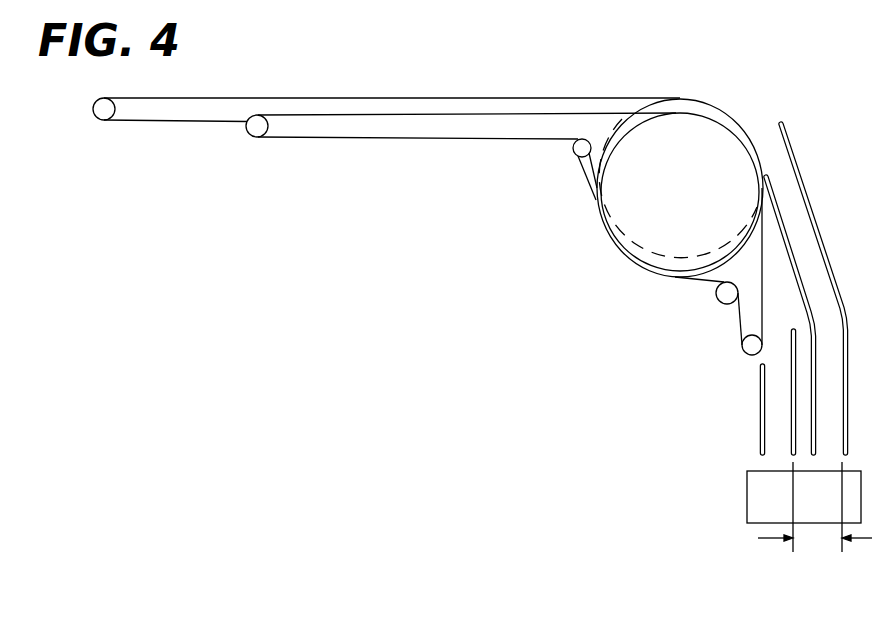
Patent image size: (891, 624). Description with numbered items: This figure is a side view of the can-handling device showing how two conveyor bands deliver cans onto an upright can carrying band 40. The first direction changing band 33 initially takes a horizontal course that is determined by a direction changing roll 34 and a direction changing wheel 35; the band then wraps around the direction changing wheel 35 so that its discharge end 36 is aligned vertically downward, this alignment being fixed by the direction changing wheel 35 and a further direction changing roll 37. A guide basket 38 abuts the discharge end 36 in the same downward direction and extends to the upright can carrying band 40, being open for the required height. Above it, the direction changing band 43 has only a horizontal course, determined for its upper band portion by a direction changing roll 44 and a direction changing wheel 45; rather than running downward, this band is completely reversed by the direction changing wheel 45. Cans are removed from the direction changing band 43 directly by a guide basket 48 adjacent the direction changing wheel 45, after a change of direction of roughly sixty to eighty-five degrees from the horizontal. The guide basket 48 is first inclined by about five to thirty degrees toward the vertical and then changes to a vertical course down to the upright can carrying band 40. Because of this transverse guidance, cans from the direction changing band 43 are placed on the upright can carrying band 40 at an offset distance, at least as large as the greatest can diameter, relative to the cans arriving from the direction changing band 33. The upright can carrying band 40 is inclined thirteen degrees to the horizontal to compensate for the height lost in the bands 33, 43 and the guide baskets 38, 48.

The first direction changing band 33 is at (342, 138).
The direction changing roll 34 is at (253, 128).
The direction changing wheel 35 is at (632, 257).
The discharge end 36 is at (748, 320).
The direction changing roll 37 is at (748, 347).
The guide basket 38 is at (772, 424).
The upright can carrying band 40 is at (735, 473).
The direction changing band 43 is at (223, 98).
The direction changing roll 44 is at (95, 110).
The direction changing wheel 45 is at (689, 103).
The guide basket 48 is at (830, 247).